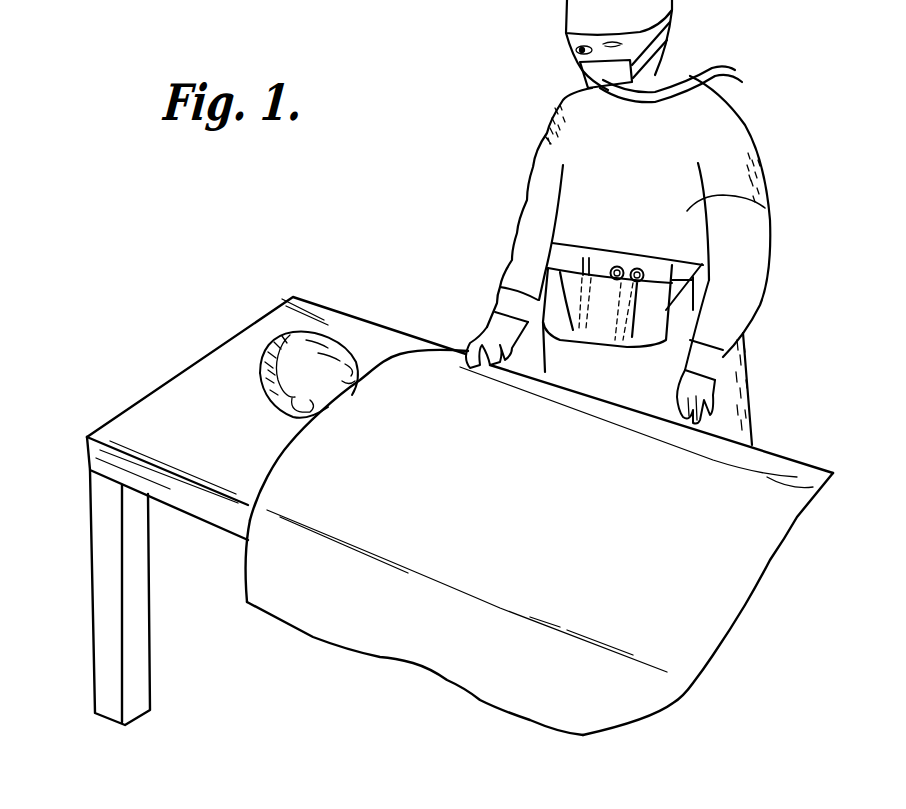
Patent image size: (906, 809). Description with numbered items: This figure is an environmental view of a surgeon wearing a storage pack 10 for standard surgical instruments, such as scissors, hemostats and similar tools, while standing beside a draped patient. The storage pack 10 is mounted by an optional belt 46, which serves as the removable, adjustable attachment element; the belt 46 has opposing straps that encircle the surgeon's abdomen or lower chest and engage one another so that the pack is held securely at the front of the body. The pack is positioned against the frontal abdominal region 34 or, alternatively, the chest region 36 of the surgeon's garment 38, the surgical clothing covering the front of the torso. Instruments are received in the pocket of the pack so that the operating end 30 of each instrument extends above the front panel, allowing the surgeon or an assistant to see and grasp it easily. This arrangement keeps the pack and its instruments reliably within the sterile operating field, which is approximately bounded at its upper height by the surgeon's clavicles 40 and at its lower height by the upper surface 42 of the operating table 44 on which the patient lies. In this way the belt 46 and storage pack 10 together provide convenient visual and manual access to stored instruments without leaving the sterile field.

The storage pack 10 is at (585, 346).
The operating end 30 is at (617, 263).
The frontal abdominal region 34 is at (680, 313).
The chest region 36 is at (765, 208).
The surgeon's garment 38 is at (742, 132).
The surgeon's clavicles 40 is at (700, 100).
The upper surface 42 is at (783, 460).
The operating table 44 is at (98, 461).
The belt 46 is at (680, 263).